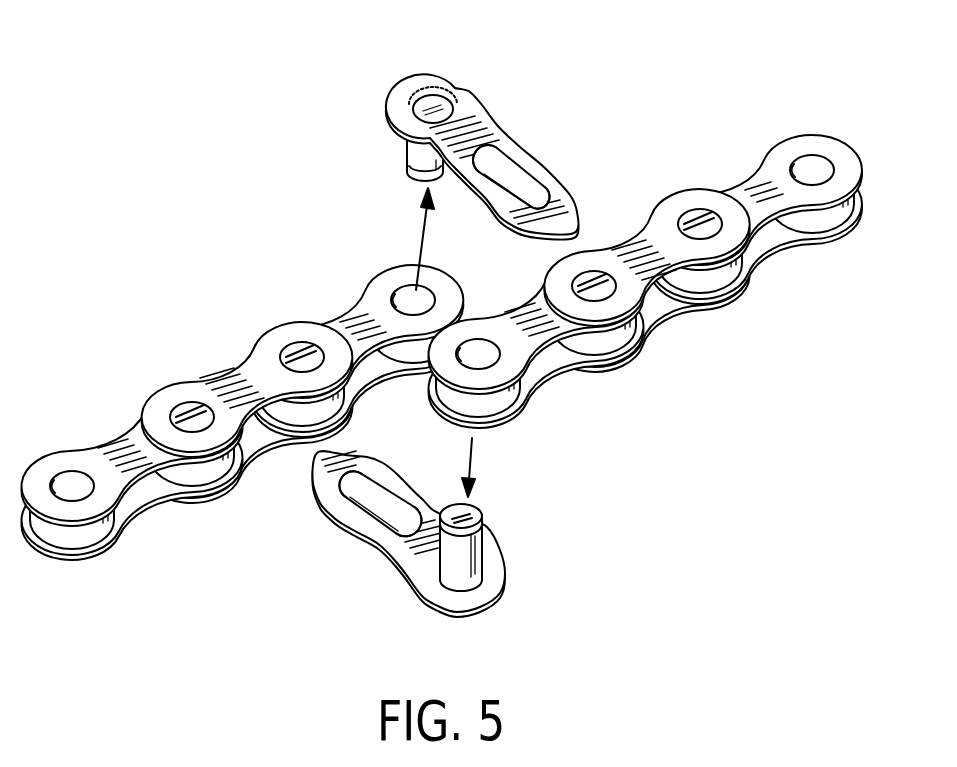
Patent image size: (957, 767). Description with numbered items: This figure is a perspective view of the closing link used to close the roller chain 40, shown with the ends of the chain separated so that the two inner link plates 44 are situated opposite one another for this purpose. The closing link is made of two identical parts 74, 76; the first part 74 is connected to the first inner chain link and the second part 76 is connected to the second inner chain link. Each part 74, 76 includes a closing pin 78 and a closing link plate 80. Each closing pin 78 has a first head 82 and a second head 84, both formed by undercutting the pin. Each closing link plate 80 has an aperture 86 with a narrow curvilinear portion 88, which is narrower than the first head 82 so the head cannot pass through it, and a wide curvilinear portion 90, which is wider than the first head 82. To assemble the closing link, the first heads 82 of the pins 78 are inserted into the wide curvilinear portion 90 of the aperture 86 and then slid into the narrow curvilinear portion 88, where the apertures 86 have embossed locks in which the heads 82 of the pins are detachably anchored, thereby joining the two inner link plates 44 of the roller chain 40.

The roller chain 40 is at (466, 347).
The inner link plates 44 is at (375, 368).
The first part 74 is at (462, 347).
The second part 76 is at (459, 627).
The closing pin 78 is at (410, 152).
The closing link plate 80 is at (536, 148).
The first head 82 is at (422, 179).
The second head 84 is at (428, 105).
The aperture 86 is at (517, 182).
The narrow curvilinear portion 88 is at (533, 193).
The wide curvilinear portion 90 is at (500, 157).